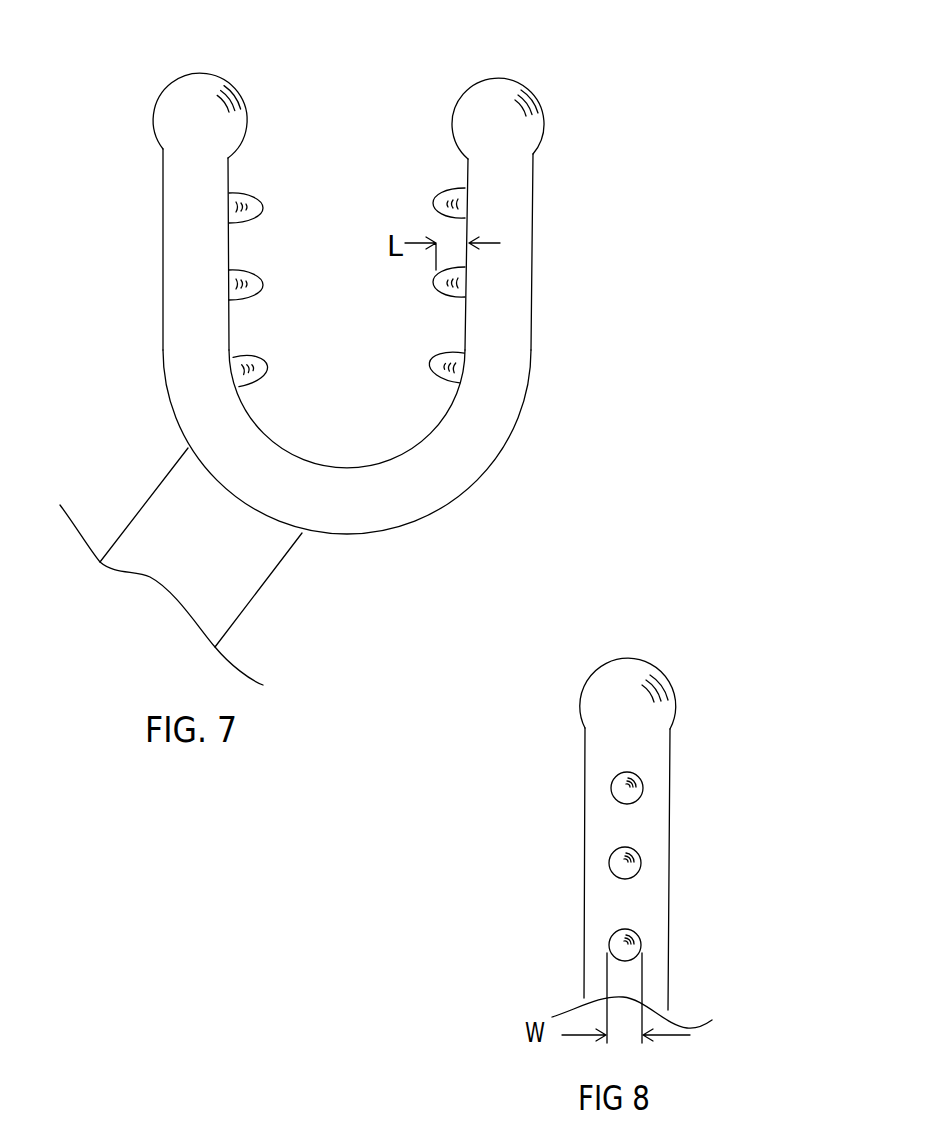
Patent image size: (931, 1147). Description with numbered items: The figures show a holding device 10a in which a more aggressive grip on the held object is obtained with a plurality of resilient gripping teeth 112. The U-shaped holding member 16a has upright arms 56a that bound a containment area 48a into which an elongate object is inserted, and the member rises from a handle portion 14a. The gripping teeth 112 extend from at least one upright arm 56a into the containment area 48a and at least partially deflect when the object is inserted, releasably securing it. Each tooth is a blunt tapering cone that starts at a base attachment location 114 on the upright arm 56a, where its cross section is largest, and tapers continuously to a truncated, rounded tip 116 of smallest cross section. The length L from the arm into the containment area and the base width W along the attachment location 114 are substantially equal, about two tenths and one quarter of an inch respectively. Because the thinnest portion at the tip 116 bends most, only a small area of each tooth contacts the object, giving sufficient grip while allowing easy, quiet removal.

In FIG. 7, the holding device 10a is at (125, 264).
In FIG. 7, the handle 14a is at (257, 592).
In FIG. 7, the U-shaped holding member 16a is at (532, 223).
In FIG. 7, the containment area 48a is at (370, 157).
In FIG. 7, the upright arm 56a is at (177, 313).
In FIG. 8, the upright arm 56a is at (584, 797).
In FIG. 7, the gripping teeth 112 is at (245, 196).
In FIG. 8, the gripping teeth 112 is at (632, 870).
In FIG. 7, the base attachment location 114 is at (244, 387).
In FIG. 8, the base attachment location 114 is at (648, 780).
In FIG. 7, the tip 116 is at (268, 362).